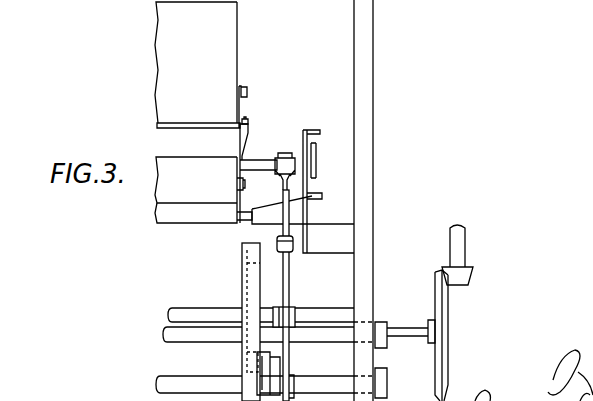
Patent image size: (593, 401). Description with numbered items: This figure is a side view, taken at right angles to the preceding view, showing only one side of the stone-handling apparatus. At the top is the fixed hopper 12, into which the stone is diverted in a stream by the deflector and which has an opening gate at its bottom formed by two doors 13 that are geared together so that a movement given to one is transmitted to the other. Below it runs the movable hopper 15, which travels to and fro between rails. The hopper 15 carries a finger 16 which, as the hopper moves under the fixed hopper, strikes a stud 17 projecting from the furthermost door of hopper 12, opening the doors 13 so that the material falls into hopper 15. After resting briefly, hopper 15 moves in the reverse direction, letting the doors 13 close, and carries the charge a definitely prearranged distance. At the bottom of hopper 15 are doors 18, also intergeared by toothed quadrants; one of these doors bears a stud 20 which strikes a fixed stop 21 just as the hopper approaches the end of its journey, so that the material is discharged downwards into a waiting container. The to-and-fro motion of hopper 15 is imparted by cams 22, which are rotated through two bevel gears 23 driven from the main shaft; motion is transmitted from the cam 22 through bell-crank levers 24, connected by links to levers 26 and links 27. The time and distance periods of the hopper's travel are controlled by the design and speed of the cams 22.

The fixed hopper 12 is at (217, 27).
The doors 13 is at (219, 127).
The movable hopper 15 is at (173, 168).
The finger 16 is at (248, 128).
The stud 17 is at (249, 119).
The doors 18 is at (187, 216).
The stud 20 is at (246, 222).
The fixed stop 21 is at (265, 208).
The cams 22 is at (252, 297).
The bevel gears 23 is at (458, 275).
The bell-crank levers 24 is at (292, 275).
The levers 26 is at (286, 198).
The links 27 is at (284, 157).